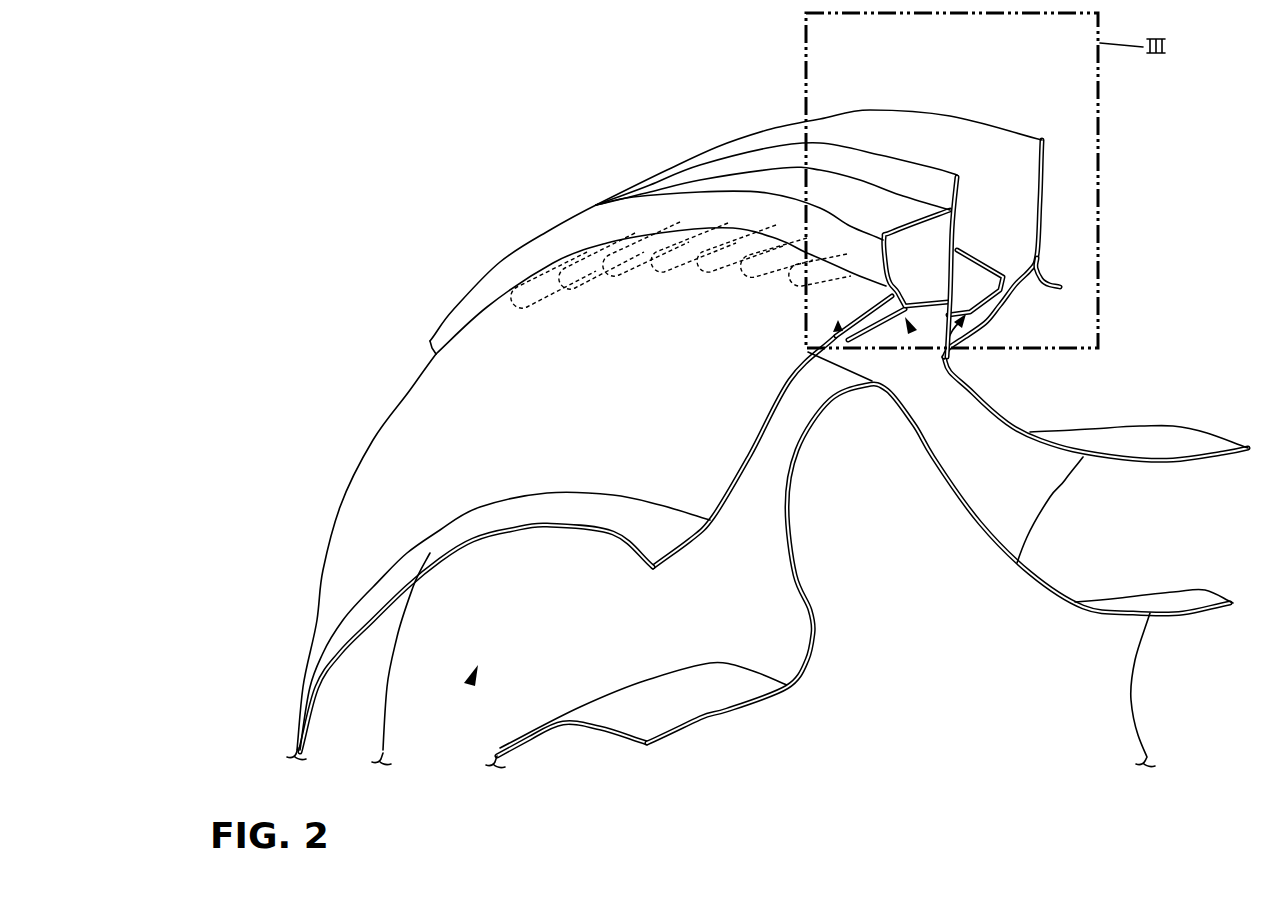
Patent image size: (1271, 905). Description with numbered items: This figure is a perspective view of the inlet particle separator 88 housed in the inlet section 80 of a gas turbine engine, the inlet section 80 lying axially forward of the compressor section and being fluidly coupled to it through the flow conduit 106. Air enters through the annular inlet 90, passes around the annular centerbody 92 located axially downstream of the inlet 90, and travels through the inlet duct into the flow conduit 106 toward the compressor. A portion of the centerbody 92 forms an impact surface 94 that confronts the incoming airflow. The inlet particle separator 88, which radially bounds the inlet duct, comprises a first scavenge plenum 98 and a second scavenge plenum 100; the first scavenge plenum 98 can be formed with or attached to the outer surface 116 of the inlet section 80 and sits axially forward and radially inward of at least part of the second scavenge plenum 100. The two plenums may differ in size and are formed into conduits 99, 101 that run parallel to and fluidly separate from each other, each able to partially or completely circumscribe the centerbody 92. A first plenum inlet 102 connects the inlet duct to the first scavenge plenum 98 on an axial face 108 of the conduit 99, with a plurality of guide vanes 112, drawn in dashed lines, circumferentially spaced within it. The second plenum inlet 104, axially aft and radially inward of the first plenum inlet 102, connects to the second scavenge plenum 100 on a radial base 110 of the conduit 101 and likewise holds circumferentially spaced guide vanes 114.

The inlet section 80 is at (412, 96).
The inlet particle separator 88 is at (488, 225).
The inlet 90 is at (470, 683).
The centerbody 92 is at (807, 573).
The impact surface 94 is at (625, 619).
The first scavenge plenum 98 is at (855, 200).
The conduit 99 is at (870, 221).
The second scavenge plenum 100 is at (980, 133).
The conduit 101 is at (911, 145).
The first plenum inlet 102 is at (830, 332).
The second plenum inlet 104 is at (953, 343).
The flow conduit 106 is at (1013, 473).
The axial face 108 is at (885, 260).
The radial base 110 is at (1033, 287).
The guide vanes 112 is at (773, 262).
The guide vanes 114 is at (913, 333).
The outer surface 116 is at (597, 418).